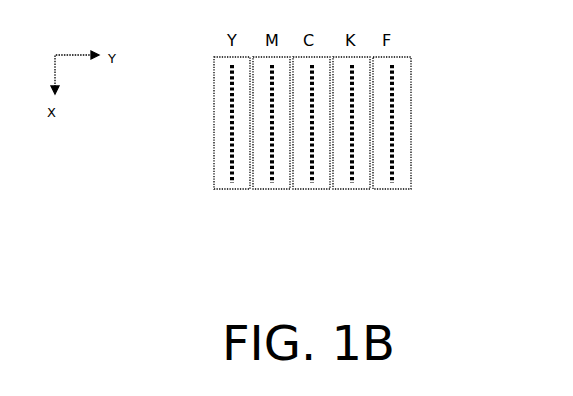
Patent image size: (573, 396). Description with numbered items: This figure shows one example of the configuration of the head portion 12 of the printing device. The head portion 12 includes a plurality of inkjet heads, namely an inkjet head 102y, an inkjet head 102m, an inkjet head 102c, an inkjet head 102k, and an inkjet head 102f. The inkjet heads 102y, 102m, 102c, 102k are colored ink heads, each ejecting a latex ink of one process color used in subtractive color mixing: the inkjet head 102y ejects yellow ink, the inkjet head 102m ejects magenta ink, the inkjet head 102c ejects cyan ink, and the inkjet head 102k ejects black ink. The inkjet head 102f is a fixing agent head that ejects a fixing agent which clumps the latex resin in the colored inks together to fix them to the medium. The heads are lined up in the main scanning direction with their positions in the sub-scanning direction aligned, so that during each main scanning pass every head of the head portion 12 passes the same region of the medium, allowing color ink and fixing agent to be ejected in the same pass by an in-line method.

The head portion 12 is at (478, 62).
The inkjet head 102y is at (239, 190).
The inkjet head 102m is at (270, 190).
The inkjet head 102c is at (318, 190).
The inkjet head 102k is at (350, 190).
The inkjet head 102f is at (397, 190).